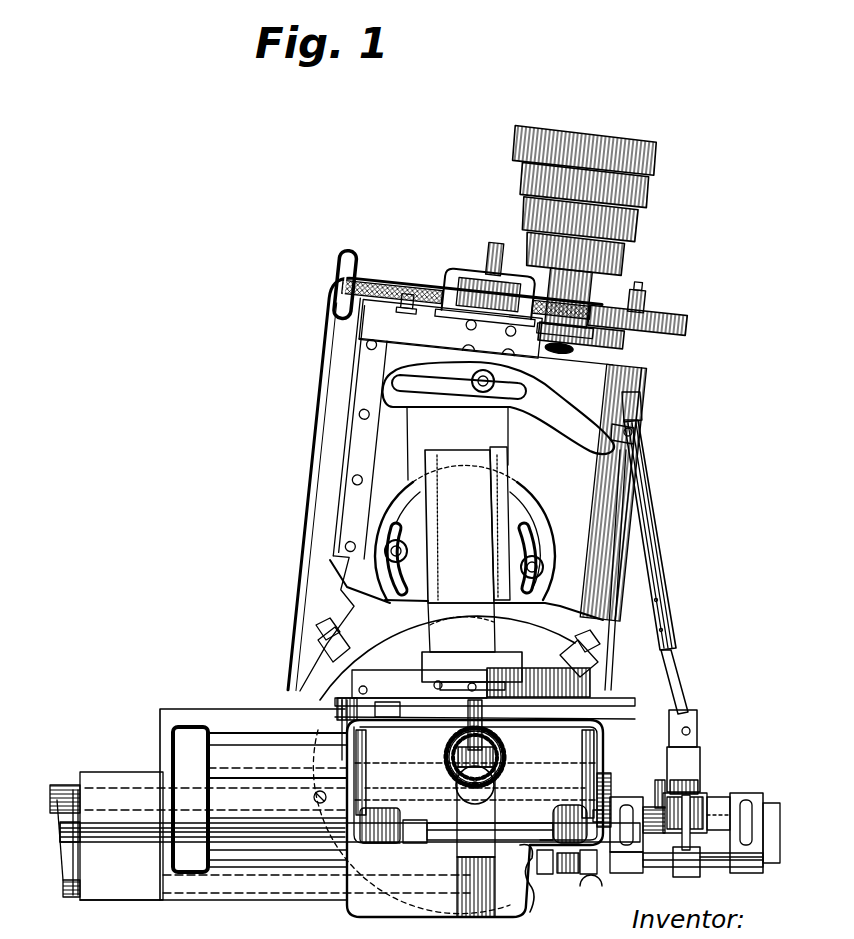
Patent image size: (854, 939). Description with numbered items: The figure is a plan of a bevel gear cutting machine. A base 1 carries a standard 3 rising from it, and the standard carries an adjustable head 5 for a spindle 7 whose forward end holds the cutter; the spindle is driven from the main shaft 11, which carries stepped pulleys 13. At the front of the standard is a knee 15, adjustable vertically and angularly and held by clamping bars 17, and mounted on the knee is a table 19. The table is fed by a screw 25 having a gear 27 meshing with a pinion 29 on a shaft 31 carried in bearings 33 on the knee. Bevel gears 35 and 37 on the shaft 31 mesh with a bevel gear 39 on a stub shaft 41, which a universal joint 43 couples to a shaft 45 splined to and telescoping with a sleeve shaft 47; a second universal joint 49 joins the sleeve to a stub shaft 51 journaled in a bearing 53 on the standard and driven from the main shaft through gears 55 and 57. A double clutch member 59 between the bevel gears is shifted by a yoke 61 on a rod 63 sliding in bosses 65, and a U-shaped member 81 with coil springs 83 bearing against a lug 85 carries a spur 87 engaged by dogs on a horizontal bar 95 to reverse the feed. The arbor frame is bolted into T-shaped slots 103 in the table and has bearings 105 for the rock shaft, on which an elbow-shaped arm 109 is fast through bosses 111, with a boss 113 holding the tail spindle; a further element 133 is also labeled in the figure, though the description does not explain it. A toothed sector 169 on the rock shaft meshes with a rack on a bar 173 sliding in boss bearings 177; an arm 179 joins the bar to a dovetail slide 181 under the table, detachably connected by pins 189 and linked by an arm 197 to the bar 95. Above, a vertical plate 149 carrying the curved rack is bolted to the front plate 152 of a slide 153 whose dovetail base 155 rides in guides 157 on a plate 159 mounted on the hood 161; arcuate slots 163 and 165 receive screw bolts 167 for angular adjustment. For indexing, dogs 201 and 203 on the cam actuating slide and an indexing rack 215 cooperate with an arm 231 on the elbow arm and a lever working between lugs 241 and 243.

The base 1 is at (318, 488).
The standard 3 is at (345, 514).
The adjustable head 5 is at (452, 327).
The spindle 7 is at (495, 280).
The main shaft 11 is at (585, 290).
The stepped pulleys 13 is at (660, 152).
The knee 15 is at (340, 697).
The clamping bars 17 is at (318, 647).
The table 19 is at (222, 720).
The screw 25 is at (608, 782).
The gear 27 is at (592, 760).
The pinion 29 is at (602, 813).
The shaft 31 is at (720, 805).
The bearings 33 is at (652, 805).
The bevel gear 35 is at (695, 790).
The bevel gear 37 is at (705, 805).
The bevel gear 39 is at (695, 770).
The stub shaft 41 is at (690, 728).
The universal joint 43 is at (688, 712).
The shaft 45 is at (682, 672).
The sleeve shaft 47 is at (656, 556).
The universal joint 49 is at (634, 432).
The stub shaft 51 is at (640, 408).
The bearing 53 is at (641, 382).
The gear 55 is at (655, 320).
The gear 57 is at (635, 305).
The double clutch member 59 is at (692, 868).
The yoke 61 is at (658, 868).
The rod 63 is at (695, 868).
The bosses 65 is at (630, 876).
The U-shaped member 81 is at (587, 890).
The coil springs 83 is at (548, 876).
The lug 85 is at (533, 910).
The spur 87 is at (565, 875).
The horizontal bar 95 is at (122, 904).
The T-shaped slots 103 is at (210, 745).
The bearings 105 is at (455, 905).
The elbow-shaped arm 109 is at (457, 848).
The bosses 111 is at (560, 803).
The boss 113 is at (492, 787).
The shaft 133 is at (452, 770).
The vertical plate 149 is at (500, 655).
The front plate 152 is at (436, 655).
The slide 153 is at (497, 456).
The dovetail base 155 is at (505, 472).
The guides 157 is at (415, 498).
The plate 159 is at (500, 434).
The hood 161 is at (400, 441).
The arcuate slot 163 is at (398, 384).
The arcuate slot 165 is at (390, 598).
The screw bolts 167 is at (385, 552).
The toothed sector 169 is at (408, 843).
The bar 173 is at (345, 851).
The boss bearings 177 is at (385, 810).
The arm 179 is at (68, 784).
The dovetail slide 181 is at (104, 782).
The pins 189 is at (320, 790).
The arm 197 is at (78, 855).
The dog 201 is at (375, 712).
The dog 203 is at (590, 696).
The indexing rack 215 is at (368, 740).
The arm 231 is at (472, 670).
The lug 241 is at (445, 770).
The lug 243 is at (498, 727).